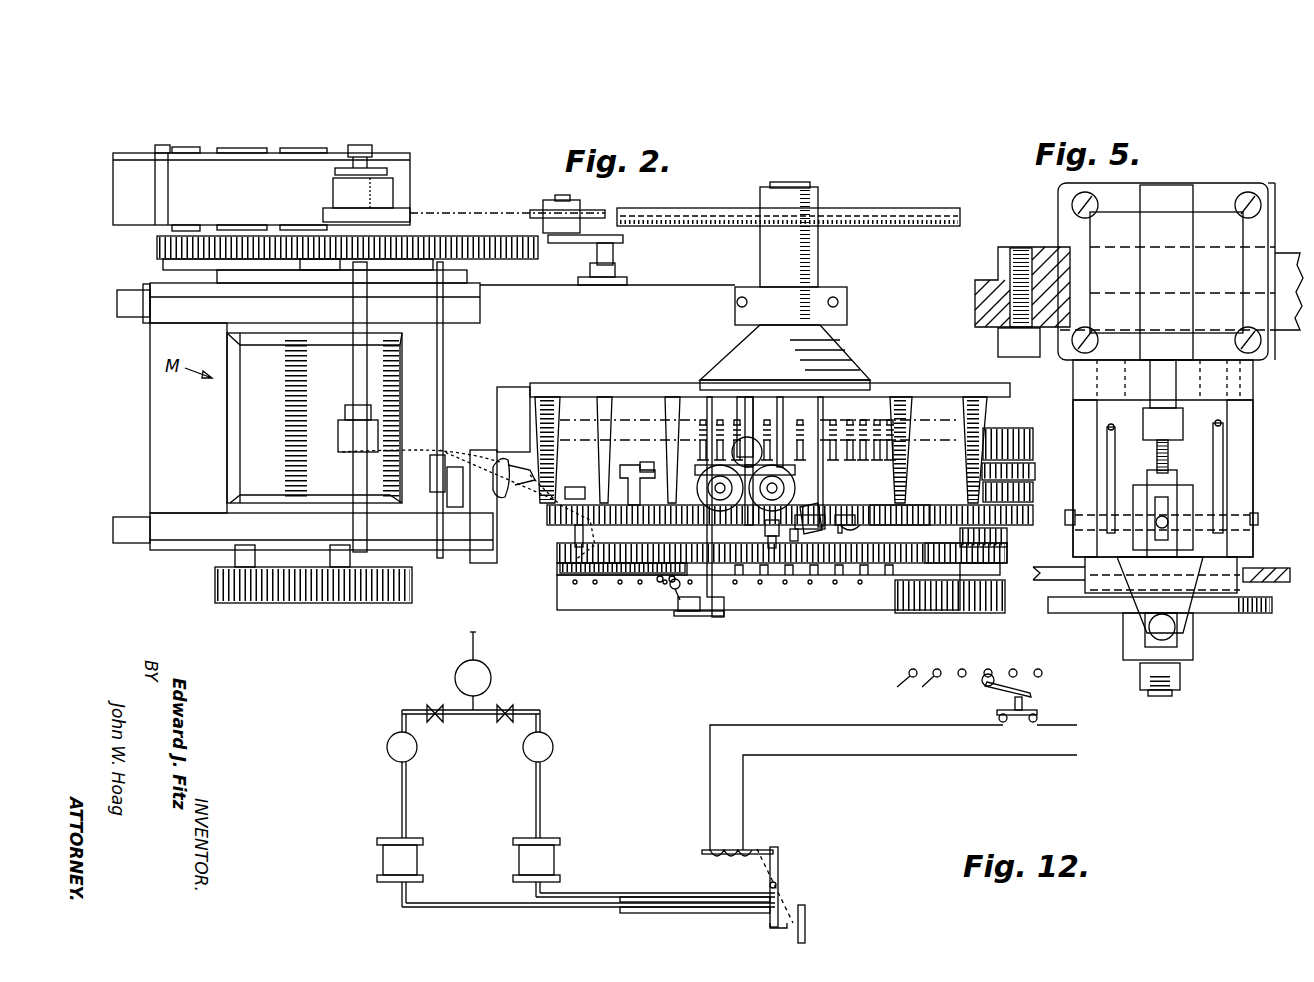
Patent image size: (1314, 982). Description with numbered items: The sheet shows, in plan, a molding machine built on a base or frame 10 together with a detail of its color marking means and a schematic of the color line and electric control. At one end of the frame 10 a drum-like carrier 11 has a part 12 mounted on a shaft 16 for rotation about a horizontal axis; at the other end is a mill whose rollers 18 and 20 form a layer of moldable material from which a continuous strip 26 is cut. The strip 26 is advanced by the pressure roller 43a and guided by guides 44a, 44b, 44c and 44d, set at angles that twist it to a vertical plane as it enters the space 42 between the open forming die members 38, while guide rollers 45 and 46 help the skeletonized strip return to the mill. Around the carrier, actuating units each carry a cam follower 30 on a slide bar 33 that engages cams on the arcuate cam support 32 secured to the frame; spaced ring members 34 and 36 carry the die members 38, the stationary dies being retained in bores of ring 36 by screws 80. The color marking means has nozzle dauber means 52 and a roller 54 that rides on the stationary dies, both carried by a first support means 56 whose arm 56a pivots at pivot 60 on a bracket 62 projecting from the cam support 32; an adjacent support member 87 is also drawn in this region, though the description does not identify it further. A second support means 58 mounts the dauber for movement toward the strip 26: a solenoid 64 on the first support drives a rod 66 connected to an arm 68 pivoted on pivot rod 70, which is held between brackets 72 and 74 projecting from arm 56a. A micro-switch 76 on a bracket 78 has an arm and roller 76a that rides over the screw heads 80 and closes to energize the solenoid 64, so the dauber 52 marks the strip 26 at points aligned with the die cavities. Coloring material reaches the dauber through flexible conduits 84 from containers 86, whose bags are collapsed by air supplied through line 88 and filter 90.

In FIG. 2, the base or frame 10 is at (668, 285).
In FIG. 2, the carrier 11 is at (878, 613).
In FIG. 2, the carrier part 12 is at (1012, 535).
In FIG. 2, the shaft 16 is at (790, 185).
In FIG. 2, the mill roller 18 is at (228, 430).
In FIG. 2, the mill roller 20 is at (402, 395).
In FIG. 2, the strip 26 is at (418, 490).
In FIG. 5, the strip 26 is at (1283, 570).
In FIG. 12, the strip 26 is at (805, 933).
In FIG. 2, the cam follower 30 is at (625, 580).
In FIG. 2, the arcuate cam support 32 is at (515, 455).
In FIG. 2, the slide bar 33 is at (862, 520).
In FIG. 2, the ring member 34 is at (605, 565).
In FIG. 2, the ring member 36 is at (665, 583).
In FIG. 2, the forming die member 38 is at (975, 595).
In FIG. 2, the space 42 is at (810, 560).
In FIG. 2, the pressure roller 43a is at (340, 420).
In FIG. 2, the guide 44a is at (463, 505).
In FIG. 2, the guide 44b is at (443, 460).
In FIG. 2, the guide 44c is at (620, 485).
In FIG. 2, the guide 44d is at (755, 527).
In FIG. 2, the guide roller 45 is at (565, 530).
In FIG. 2, the guide roller 46 is at (500, 500).
In FIG. 12, the dauber means (nozzle) 52 is at (775, 930).
In FIG. 5, the roller 54 is at (1255, 615).
In FIG. 5, the first support means 56 is at (1292, 235).
In FIG. 2, the arm 56a is at (773, 540).
In FIG. 5, the arm 56a is at (1042, 247).
In FIG. 5, the second support means 58 is at (1200, 470).
In FIG. 2, the pivot 60 is at (885, 560).
In FIG. 2, the arm or bracket 62 is at (848, 535).
In FIG. 5, the solenoid 64 is at (1218, 215).
In FIG. 12, the solenoid 64 is at (715, 845).
In FIG. 5, the rod 66 is at (1157, 455).
In FIG. 5, the arm 68 is at (1155, 515).
In FIG. 12, the arm 68 is at (780, 857).
In FIG. 5, the pivot rod 70 is at (1258, 518).
In FIG. 12, the pivot rod 70 is at (778, 885).
In FIG. 5, the arm or bracket 72 is at (1085, 410).
In FIG. 5, the arm or bracket 74 is at (1245, 425).
In FIG. 2, the micro-switch 76 is at (700, 616).
In FIG. 12, the micro-switch 76 is at (1037, 703).
In FIG. 2, the arm and roller 76a is at (678, 600).
In FIG. 12, the arm and roller 76a is at (982, 687).
In FIG. 2, the bracket 78 is at (720, 620).
In FIG. 12, the screws 80 is at (908, 682).
In FIG. 5, the conduits 84 is at (1111, 424).
In FIG. 12, the conduits 84 is at (635, 897).
In FIG. 2, the container 86 is at (725, 512).
In FIG. 12, the container 86 is at (400, 855).
In FIG. 2, the support 87 is at (700, 425).
In FIG. 12, the line 88 is at (478, 640).
In FIG. 2, the filter 90 is at (760, 440).
In FIG. 12, the filter 90 is at (455, 673).